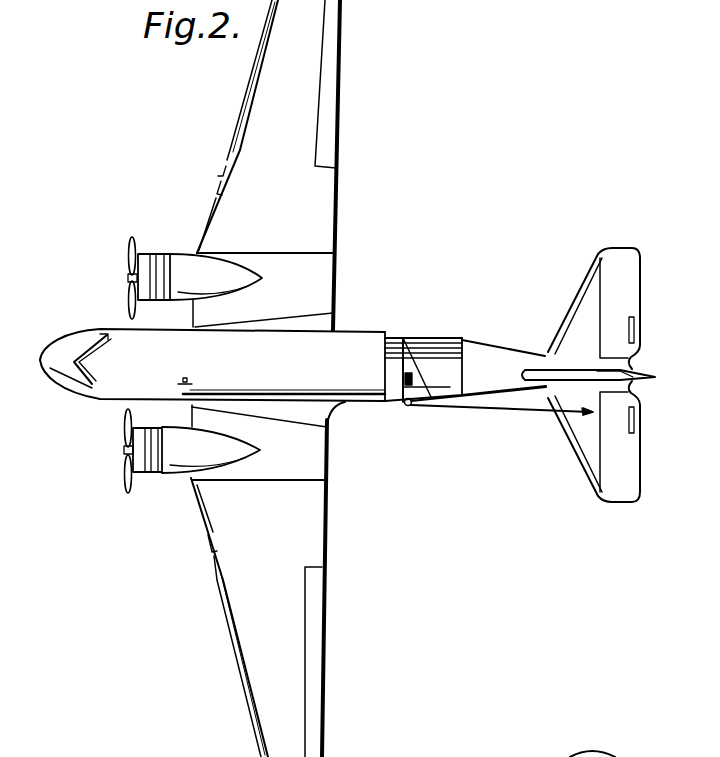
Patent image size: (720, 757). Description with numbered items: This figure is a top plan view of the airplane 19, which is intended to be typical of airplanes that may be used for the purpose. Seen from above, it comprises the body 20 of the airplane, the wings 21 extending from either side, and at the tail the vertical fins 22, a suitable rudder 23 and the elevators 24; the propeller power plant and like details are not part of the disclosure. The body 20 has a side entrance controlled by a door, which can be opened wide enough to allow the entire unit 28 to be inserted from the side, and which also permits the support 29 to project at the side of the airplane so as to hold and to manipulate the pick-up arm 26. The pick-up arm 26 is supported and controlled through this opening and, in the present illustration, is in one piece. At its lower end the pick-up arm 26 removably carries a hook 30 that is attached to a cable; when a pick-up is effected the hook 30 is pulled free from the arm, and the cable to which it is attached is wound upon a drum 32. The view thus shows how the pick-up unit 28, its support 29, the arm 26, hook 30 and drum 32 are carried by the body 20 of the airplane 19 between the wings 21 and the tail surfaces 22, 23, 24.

The airplane 19 is at (275, 369).
The body 20 is at (315, 340).
The wings 21 is at (263, 96).
The vertical fins 22 is at (527, 372).
The rudder 23 is at (633, 363).
The elevators 24 is at (617, 295).
The pick-up arm 26 is at (290, 396).
The unit 28 is at (420, 377).
The support 29 is at (403, 406).
The hook 30 is at (590, 414).
The drum 32 is at (405, 368).